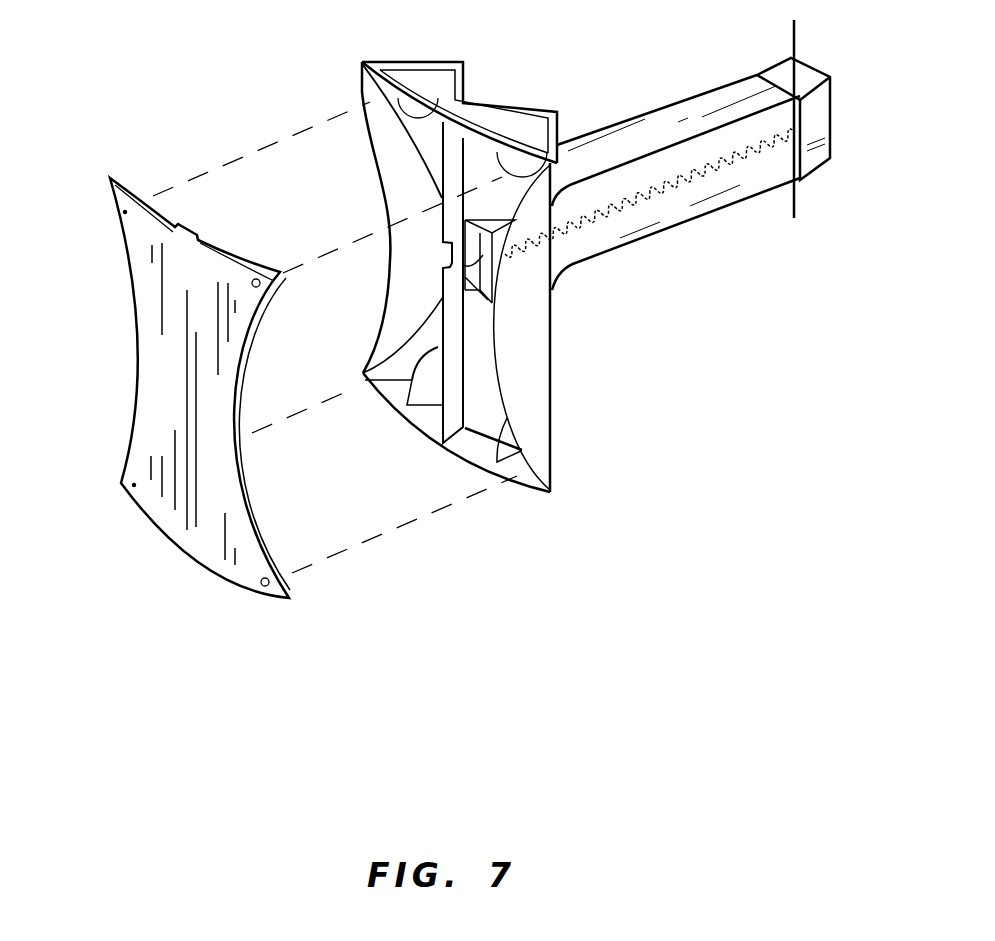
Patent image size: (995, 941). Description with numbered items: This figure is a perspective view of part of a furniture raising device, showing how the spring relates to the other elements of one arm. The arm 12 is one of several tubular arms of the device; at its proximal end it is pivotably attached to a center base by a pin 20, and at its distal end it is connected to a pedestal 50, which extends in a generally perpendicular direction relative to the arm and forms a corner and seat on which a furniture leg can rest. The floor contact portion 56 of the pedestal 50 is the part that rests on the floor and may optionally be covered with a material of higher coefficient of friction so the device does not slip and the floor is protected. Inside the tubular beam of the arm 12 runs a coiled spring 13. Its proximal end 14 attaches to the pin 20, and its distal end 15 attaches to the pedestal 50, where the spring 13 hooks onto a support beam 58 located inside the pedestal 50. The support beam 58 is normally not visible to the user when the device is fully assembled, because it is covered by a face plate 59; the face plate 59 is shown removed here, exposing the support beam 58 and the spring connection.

The arm 12 is at (685, 270).
The coiled spring 13 is at (733, 165).
The proximal end of the spring 14 is at (802, 125).
The distal end of the spring 15 is at (465, 270).
The pin 20 is at (796, 203).
The pedestal 50 is at (48, 163).
The floor contact portion 56 is at (442, 96).
The support beam 58 is at (457, 413).
The face plate 59 is at (178, 404).